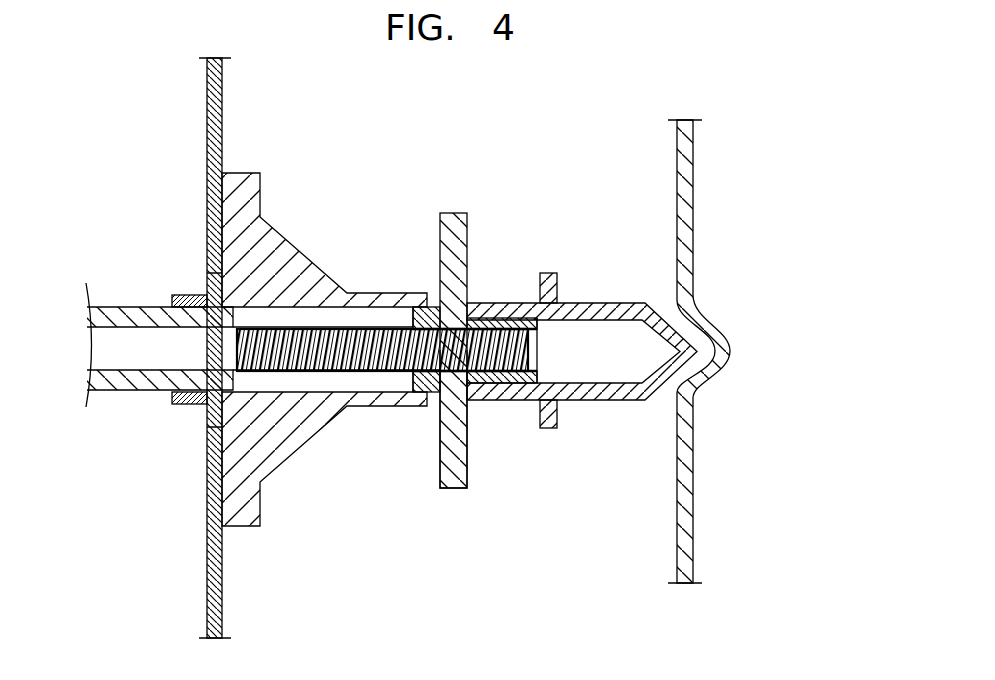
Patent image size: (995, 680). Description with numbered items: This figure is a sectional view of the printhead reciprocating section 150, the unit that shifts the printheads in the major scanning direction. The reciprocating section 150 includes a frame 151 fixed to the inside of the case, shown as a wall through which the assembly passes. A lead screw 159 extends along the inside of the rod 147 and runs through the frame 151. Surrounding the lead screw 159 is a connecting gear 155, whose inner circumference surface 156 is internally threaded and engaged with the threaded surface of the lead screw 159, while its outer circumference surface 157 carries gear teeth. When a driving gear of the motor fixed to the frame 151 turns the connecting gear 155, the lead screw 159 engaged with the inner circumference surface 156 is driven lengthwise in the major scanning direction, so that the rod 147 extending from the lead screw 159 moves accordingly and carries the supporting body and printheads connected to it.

The rod 147 is at (121, 306).
The reciprocating section 150 is at (328, 148).
The frame 151 is at (213, 611).
The connecting gear 155 is at (452, 212).
The inner circumference surface 156 is at (522, 383).
The outer circumference surface 157 is at (455, 489).
The lead screw 159 is at (357, 330).